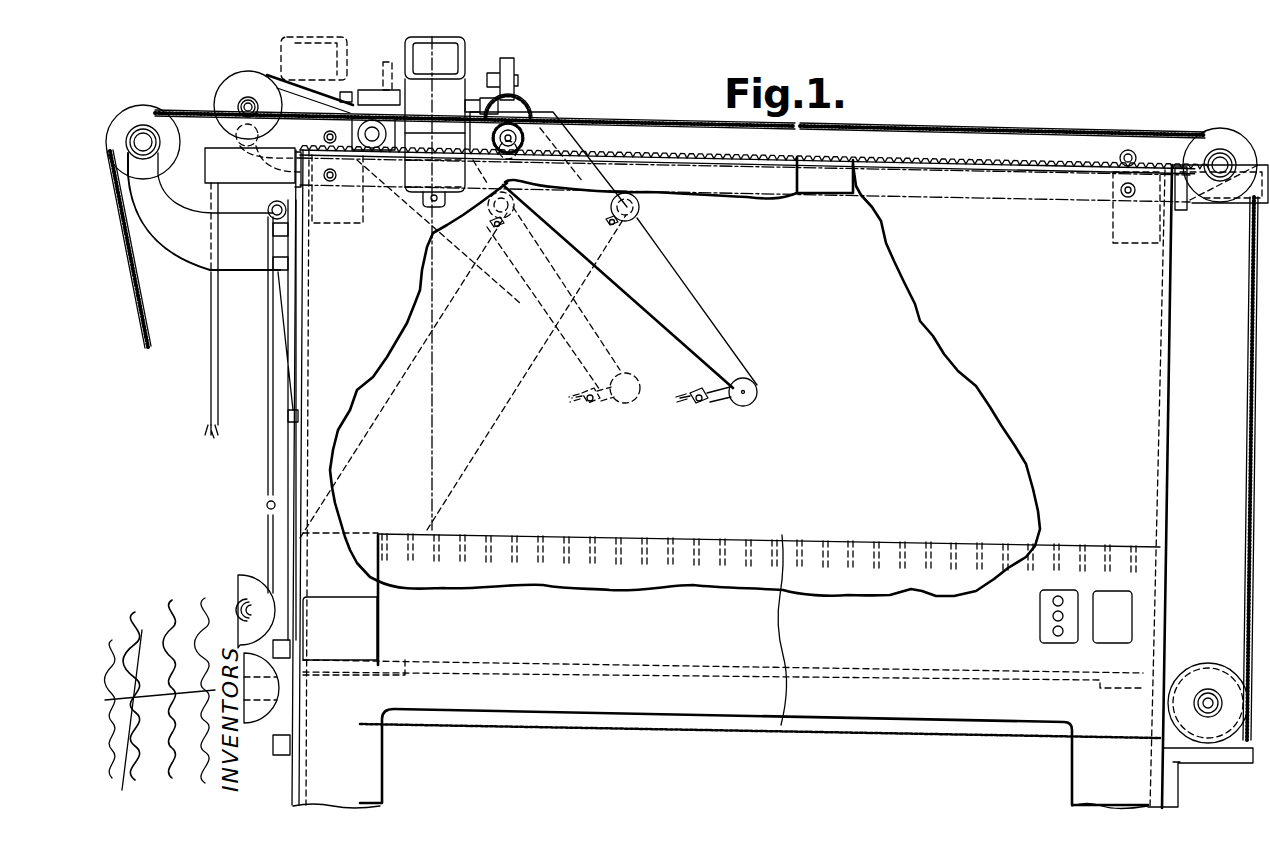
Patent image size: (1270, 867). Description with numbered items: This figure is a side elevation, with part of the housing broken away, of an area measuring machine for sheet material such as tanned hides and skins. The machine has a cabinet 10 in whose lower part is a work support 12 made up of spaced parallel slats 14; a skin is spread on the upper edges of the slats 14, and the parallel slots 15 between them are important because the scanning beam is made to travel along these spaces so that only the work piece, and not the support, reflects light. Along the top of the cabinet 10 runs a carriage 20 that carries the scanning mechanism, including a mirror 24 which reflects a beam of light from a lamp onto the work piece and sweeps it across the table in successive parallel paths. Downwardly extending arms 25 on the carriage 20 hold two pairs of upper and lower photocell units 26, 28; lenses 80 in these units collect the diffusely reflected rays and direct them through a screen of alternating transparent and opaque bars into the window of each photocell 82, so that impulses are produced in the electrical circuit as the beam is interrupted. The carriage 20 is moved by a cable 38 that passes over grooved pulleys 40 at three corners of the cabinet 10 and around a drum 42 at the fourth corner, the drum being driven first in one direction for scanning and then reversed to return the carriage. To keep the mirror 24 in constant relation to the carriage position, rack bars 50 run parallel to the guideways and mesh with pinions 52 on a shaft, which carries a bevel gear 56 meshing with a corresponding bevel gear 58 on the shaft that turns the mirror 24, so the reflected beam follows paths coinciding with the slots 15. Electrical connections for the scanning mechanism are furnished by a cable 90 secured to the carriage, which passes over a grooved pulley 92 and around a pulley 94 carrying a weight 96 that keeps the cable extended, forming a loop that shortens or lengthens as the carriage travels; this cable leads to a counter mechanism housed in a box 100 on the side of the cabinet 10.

The cabinet 10 is at (1152, 282).
The work support 12 is at (992, 527).
The slats 14 is at (918, 575).
The slots 15 is at (736, 572).
The carriage 20 is at (555, 120).
The mirror 24 is at (455, 50).
The arms 25 is at (663, 272).
The upper photocell units 26 is at (648, 221).
The lower photocell units 28 is at (607, 412).
The cable 38 is at (895, 122).
The grooved pulleys 40 is at (267, 690).
The drum 42 is at (1204, 673).
The rack bars 50 is at (622, 151).
The pinions 52 is at (520, 126).
The bevel gear 56 is at (508, 108).
The bevel gear 58 is at (516, 63).
The lenses 80 is at (605, 224).
The photocell 82 is at (770, 368).
The cable 90 is at (218, 352).
The grooved pulley 92 is at (230, 82).
The pulley 94 is at (263, 597).
The weight 96 is at (253, 623).
The box 100 is at (373, 635).